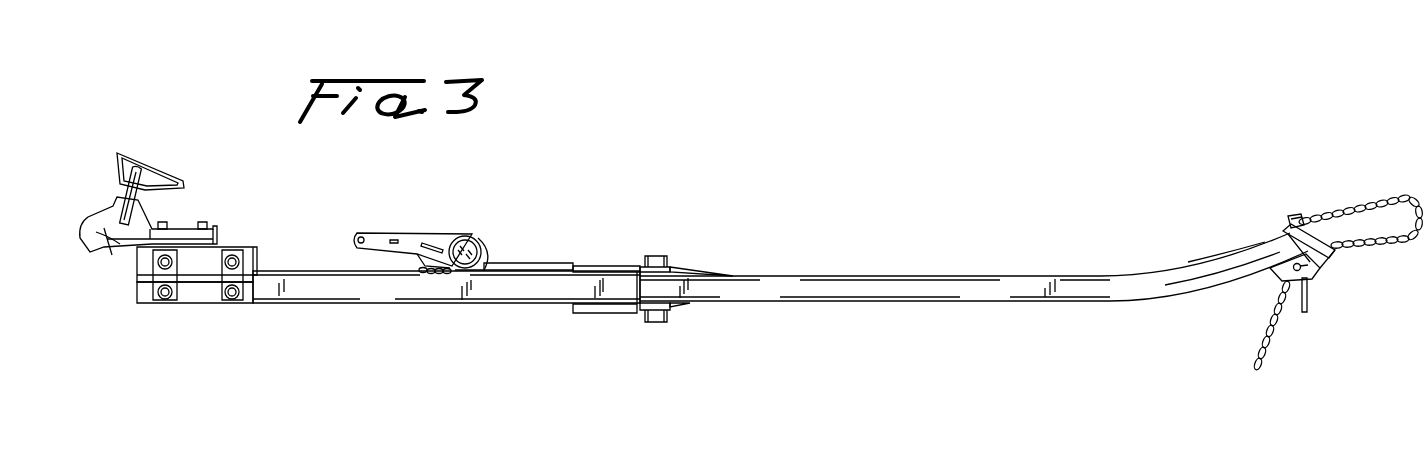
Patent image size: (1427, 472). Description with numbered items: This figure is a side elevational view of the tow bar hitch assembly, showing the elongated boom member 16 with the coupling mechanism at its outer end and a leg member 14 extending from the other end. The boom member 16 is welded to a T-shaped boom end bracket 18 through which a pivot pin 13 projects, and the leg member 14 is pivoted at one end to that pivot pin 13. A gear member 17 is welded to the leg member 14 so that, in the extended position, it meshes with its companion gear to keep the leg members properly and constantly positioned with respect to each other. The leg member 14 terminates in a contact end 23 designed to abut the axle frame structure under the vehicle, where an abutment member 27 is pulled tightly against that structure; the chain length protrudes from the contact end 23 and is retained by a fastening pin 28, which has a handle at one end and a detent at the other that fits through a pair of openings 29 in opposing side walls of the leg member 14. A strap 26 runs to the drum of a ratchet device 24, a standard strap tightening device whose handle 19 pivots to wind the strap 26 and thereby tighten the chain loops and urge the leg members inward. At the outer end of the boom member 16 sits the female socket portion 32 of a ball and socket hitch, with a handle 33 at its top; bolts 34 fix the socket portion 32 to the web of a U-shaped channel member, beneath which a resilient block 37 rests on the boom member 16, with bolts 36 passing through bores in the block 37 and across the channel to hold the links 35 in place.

The pivot pin 13 is at (659, 255).
The leg member 14 is at (879, 290).
The boom member 16 is at (380, 292).
The gear member 17 is at (673, 304).
The T-shaped boom end bracket 18 is at (672, 268).
The handle 19 is at (405, 231).
The contact end 23 is at (1279, 225).
The ratchet device 24 is at (462, 224).
The strap 26 is at (550, 263).
The abutment member 27 is at (1296, 215).
The fastening pin 28 is at (1309, 300).
The openings 29 is at (1312, 268).
The female portion 32 is at (108, 234).
The handle 33 is at (170, 163).
The bolts 34 is at (203, 223).
The links 35 is at (160, 275).
The bolts 36 is at (167, 303).
The resilient block 37 is at (257, 257).